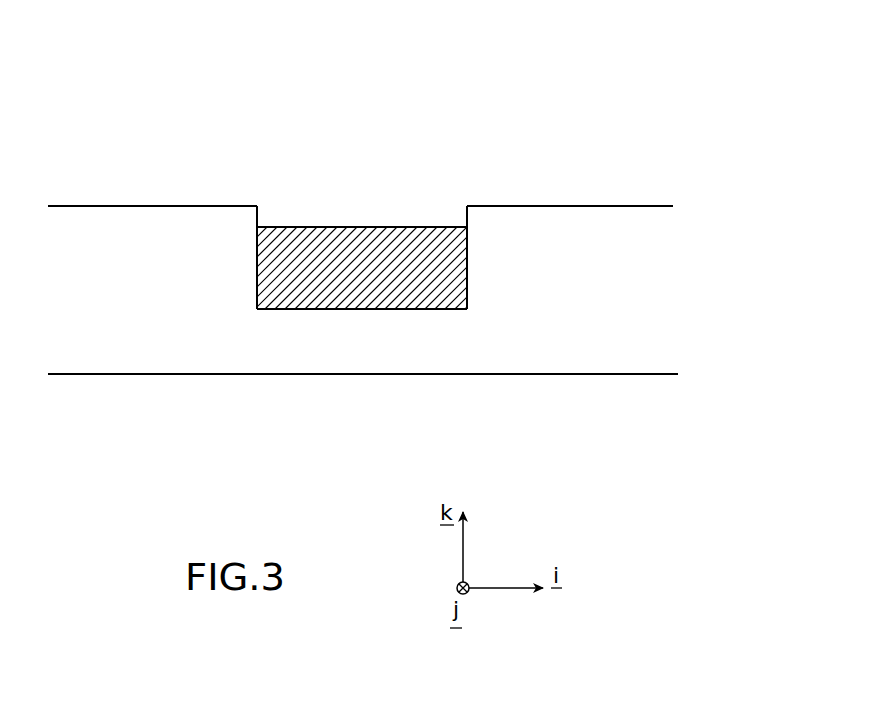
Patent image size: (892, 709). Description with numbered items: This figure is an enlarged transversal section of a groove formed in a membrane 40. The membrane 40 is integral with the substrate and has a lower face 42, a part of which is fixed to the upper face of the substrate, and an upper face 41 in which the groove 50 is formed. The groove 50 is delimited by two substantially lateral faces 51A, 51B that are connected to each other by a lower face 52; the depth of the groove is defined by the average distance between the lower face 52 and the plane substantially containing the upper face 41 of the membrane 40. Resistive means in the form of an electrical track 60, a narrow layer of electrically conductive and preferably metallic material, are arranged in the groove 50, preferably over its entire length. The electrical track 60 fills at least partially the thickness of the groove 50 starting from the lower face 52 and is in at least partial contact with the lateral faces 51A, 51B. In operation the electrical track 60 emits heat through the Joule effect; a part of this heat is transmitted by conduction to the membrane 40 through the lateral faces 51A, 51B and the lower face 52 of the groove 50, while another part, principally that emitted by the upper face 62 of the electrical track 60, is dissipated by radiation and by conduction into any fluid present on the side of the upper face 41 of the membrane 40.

The membrane 40 is at (401, 278).
The upper face of the membrane 41 is at (637, 206).
The lower face of the membrane 42 is at (632, 374).
The groove 50 is at (361, 226).
The lateral face of the groove 51A is at (257, 268).
The lateral face of the groove 51B is at (467, 257).
The lower face of the groove 52 is at (322, 310).
The electrical track 60 is at (281, 205).
The upper face of the electrical track 62 is at (344, 227).